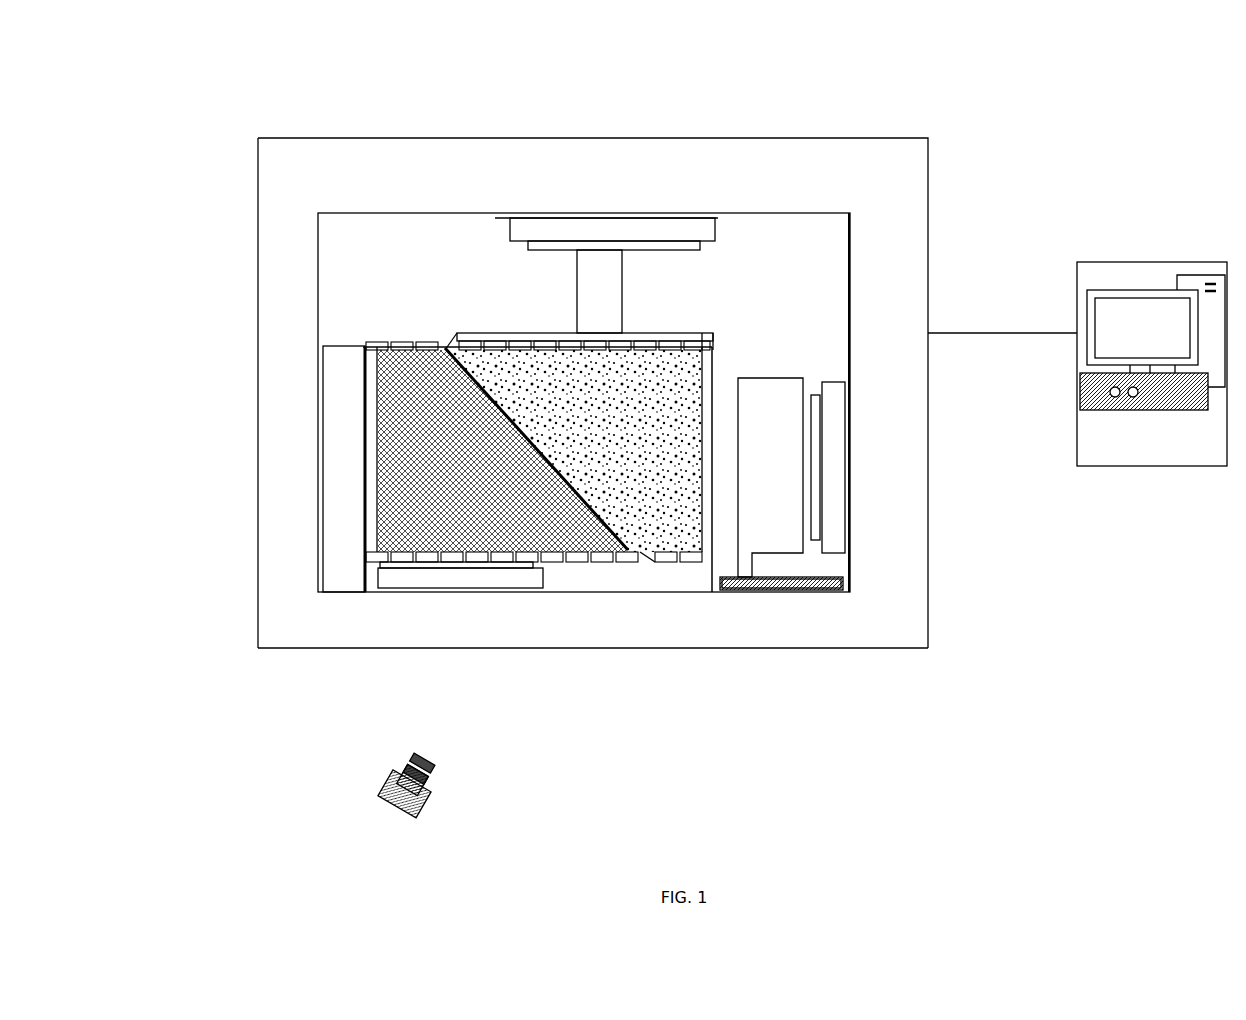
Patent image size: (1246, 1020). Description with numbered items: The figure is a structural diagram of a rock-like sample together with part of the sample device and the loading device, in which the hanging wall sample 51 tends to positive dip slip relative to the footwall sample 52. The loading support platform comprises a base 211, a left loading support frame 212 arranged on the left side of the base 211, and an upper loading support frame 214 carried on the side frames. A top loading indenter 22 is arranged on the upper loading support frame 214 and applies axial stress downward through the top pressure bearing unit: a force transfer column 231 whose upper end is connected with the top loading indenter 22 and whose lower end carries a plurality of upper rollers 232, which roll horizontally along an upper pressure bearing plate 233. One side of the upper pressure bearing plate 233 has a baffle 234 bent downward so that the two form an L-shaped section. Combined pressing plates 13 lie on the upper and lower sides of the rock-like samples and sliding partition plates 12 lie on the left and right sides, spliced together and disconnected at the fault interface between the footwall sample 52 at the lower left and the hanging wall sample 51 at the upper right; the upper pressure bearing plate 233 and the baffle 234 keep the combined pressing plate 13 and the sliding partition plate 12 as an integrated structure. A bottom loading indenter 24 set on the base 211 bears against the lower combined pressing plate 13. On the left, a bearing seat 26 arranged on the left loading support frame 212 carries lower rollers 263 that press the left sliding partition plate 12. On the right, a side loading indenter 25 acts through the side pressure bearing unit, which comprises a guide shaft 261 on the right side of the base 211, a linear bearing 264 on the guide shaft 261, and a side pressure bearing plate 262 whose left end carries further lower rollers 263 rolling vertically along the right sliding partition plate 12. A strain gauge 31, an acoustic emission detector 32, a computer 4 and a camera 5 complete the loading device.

The computer 4 is at (1125, 410).
The camera 5 is at (440, 800).
The sliding partition plate 12 is at (373, 452).
The combined pressing plate 13 is at (402, 345).
The top loading indenter 22 is at (652, 225).
The bottom loading indenter 24 is at (466, 570).
The side loading indenter 25 is at (833, 515).
The bearing seat 26 is at (338, 541).
The strain gauge 31 is at (365, 398).
The acoustic emission detector 32 is at (378, 455).
The hanging wall sample 51 is at (655, 425).
The footwall sample 52 is at (410, 488).
The base 211 is at (373, 622).
The left loading support frame 212 is at (297, 500).
The upper loading support frame 214 is at (622, 175).
The force transfer column 231 is at (598, 268).
The upper roller 232 is at (490, 352).
The upper pressure bearing plate 233 is at (700, 337).
The baffle 234 is at (720, 333).
The guide shaft 261 is at (752, 593).
The side pressure bearing plate 262 is at (778, 523).
The lower roller 263 is at (358, 488).
The linear bearing 264 is at (787, 592).